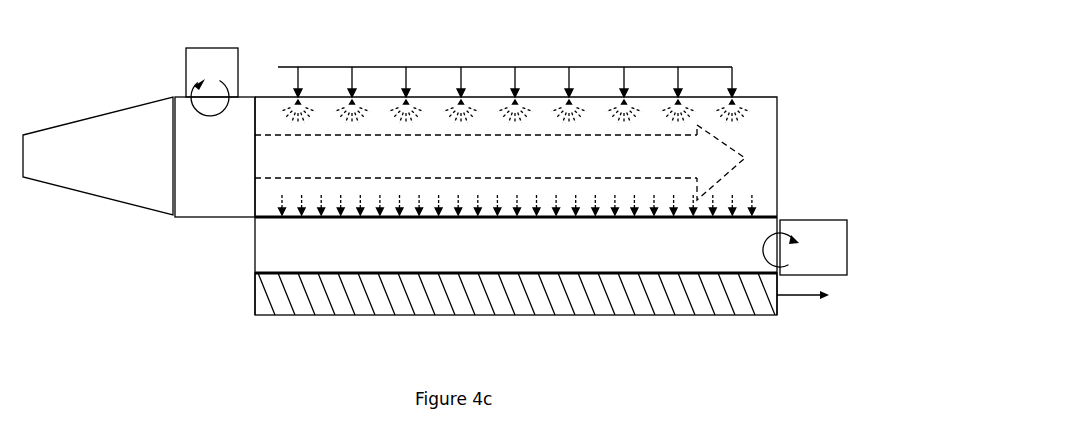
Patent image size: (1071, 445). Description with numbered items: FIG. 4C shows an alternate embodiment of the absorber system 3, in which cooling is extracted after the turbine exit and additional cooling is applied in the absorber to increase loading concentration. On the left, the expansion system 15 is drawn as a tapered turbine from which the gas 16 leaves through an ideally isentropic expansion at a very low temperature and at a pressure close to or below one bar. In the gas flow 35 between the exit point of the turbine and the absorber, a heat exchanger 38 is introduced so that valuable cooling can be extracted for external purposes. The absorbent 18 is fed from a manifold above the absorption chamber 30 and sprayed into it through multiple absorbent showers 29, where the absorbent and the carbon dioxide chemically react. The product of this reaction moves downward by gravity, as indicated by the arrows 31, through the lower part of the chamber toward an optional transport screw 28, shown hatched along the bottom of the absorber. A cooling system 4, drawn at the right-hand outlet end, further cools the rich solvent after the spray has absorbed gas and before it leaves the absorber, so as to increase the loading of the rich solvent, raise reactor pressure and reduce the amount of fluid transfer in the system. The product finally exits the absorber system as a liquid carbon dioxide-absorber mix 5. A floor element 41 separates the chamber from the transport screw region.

The absorber system 3 is at (780, 95).
The cooling system 4 is at (855, 203).
The liquid CO2-absorber mix 5 is at (805, 297).
The expansion system 15 is at (103, 200).
The gas 16 is at (318, 163).
The absorbent 18 is at (283, 68).
The transport screw 28 is at (360, 293).
The absorbent showers 29 is at (410, 118).
The absorption chamber 30 is at (760, 173).
The arrows 31 is at (405, 200).
The gas flow 35 is at (195, 218).
The heat exchanger 38 is at (205, 47).
The bottom wall / conveyor plate 41 is at (255, 247).